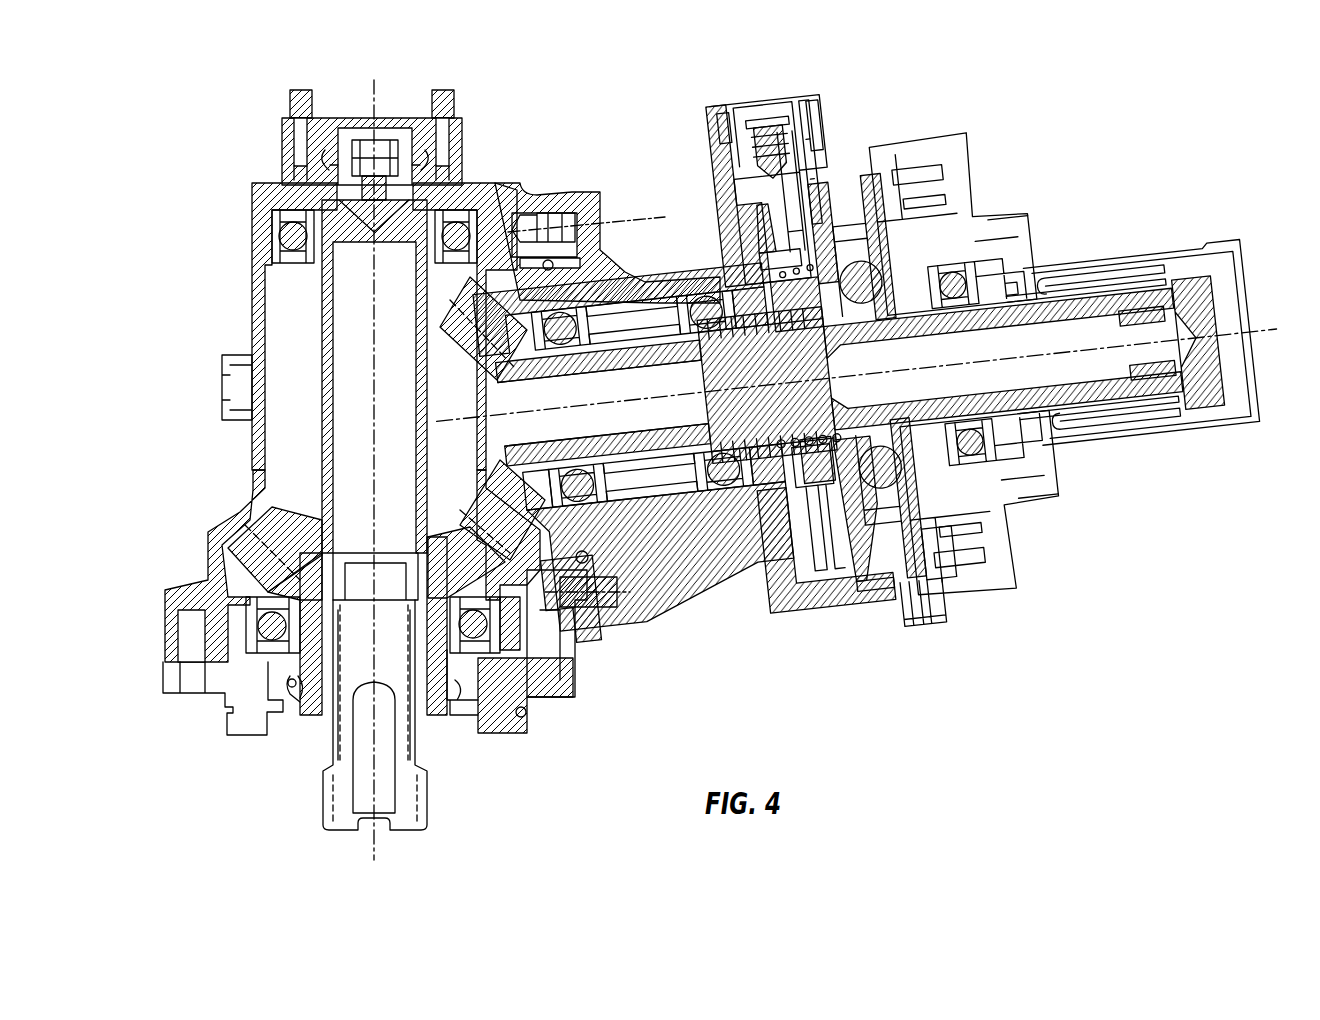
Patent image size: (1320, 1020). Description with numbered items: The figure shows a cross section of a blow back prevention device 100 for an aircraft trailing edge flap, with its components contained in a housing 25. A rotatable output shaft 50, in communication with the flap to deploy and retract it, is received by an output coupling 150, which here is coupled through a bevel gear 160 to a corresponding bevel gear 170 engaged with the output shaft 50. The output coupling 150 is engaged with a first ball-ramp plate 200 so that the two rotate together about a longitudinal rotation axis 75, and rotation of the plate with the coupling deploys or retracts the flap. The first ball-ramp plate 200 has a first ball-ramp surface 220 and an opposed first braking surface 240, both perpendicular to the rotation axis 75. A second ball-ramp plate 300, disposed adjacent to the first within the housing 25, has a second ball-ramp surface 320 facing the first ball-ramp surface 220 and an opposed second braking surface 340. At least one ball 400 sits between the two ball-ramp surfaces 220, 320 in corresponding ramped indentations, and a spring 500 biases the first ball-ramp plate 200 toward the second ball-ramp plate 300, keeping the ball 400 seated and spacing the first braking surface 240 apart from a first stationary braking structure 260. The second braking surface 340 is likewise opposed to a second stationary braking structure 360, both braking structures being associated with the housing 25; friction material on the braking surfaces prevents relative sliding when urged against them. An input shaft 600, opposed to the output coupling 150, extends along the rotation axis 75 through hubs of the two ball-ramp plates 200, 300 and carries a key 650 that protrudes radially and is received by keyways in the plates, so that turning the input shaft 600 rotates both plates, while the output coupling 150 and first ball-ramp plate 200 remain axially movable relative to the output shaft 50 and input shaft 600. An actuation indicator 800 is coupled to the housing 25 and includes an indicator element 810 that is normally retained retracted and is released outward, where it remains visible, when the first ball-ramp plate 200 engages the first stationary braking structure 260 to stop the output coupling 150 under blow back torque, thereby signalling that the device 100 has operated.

The blow back prevention device 100 is at (368, 453).
The housing 25 is at (640, 266).
The output shaft 50 is at (436, 617).
The longitudinal rotation axis 75 is at (528, 422).
The output coupling 150 is at (715, 444).
The bevel gear 160 is at (493, 330).
The bevel gear 170 is at (476, 561).
The first ball-ramp plate 200 is at (760, 250).
The first ball-ramp surface 220 is at (876, 570).
The first braking surface 240 is at (790, 196).
The first stationary braking structure 260 is at (890, 530).
The second ball-ramp plate 300 is at (916, 265).
The second ball-ramp surface 320 is at (826, 165).
The second braking surface 340 is at (944, 568).
The second stationary braking structure 360 is at (874, 202).
The ball 400 is at (880, 282).
The spring 500 is at (822, 258).
The input shaft 600 is at (1042, 400).
The key 650 is at (805, 322).
The actuation indicator 800 is at (762, 98).
The indicator element 810 is at (758, 112).